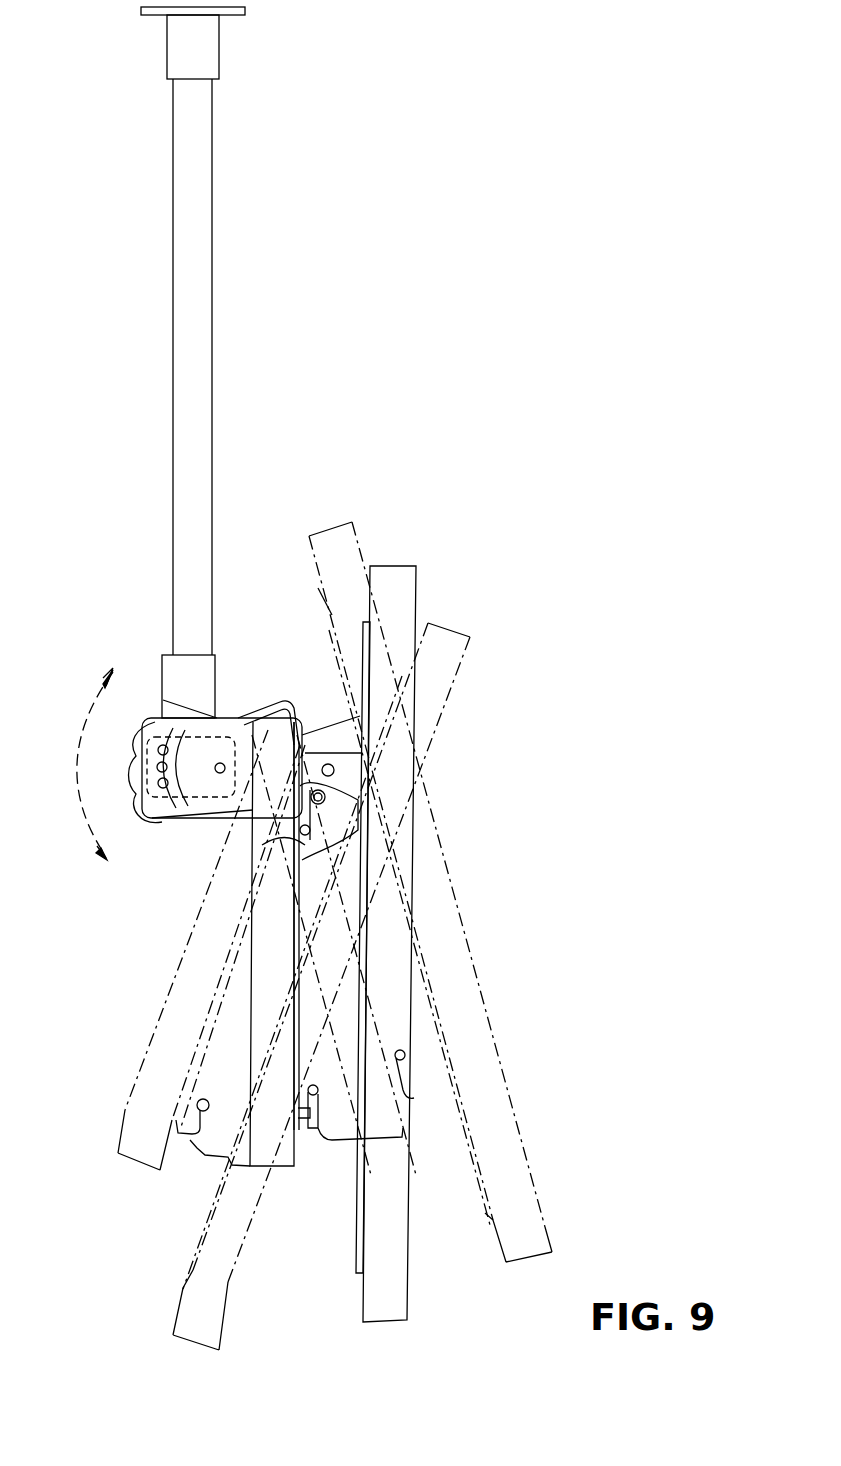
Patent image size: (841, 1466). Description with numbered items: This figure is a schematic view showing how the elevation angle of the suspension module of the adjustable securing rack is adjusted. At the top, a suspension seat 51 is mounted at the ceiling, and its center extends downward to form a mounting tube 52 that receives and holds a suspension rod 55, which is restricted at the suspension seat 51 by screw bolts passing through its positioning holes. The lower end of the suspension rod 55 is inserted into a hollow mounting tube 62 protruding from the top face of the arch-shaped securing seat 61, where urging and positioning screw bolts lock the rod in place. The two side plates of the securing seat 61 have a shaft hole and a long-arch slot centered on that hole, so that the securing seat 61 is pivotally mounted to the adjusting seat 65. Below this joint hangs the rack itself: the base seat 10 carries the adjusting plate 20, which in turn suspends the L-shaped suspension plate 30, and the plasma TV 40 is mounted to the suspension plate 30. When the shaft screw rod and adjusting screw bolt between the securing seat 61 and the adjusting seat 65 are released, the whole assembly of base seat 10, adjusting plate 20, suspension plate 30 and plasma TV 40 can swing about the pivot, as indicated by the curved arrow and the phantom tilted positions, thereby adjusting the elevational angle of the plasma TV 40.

The base seat 10 is at (283, 1184).
The adjusting plate 20 is at (313, 1130).
The suspension plate 30 is at (340, 1133).
The plasma TV 40 is at (388, 572).
The suspension seat 51 is at (146, 15).
The mounting tube 52 is at (219, 55).
The suspension rod 55 is at (208, 152).
The securing seat 61 is at (198, 780).
The mounting tube 62 is at (167, 670).
The adjusting seat 65 is at (147, 808).